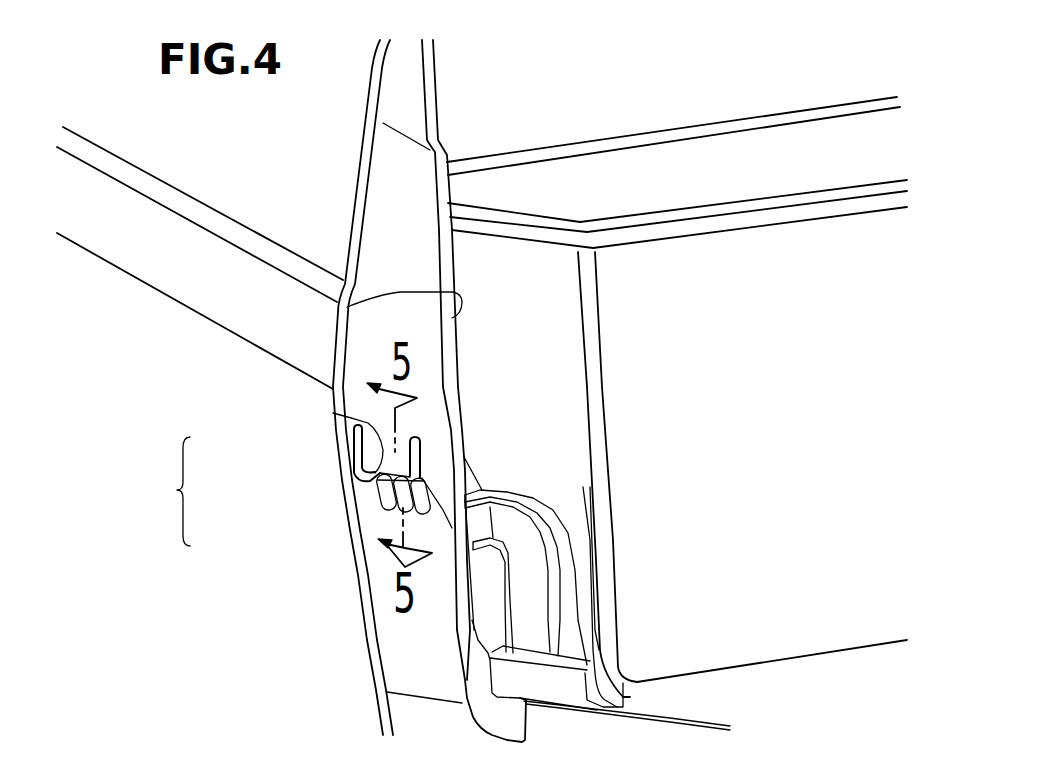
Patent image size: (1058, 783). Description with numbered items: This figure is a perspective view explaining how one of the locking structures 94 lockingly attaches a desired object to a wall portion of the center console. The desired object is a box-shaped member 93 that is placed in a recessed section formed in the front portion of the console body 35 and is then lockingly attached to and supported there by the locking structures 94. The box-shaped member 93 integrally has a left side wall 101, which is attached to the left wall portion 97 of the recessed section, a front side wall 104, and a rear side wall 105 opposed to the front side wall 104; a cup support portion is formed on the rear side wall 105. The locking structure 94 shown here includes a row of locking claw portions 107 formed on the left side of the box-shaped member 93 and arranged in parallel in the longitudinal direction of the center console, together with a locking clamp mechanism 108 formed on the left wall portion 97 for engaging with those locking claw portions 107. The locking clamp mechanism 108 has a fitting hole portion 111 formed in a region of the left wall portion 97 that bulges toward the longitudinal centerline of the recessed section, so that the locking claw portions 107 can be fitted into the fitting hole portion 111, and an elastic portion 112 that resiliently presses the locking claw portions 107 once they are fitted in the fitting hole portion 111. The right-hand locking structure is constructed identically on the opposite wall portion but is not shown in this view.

The console body 35 is at (173, 257).
The box-shaped member 93 is at (596, 112).
The locking structure 94 is at (165, 491).
The left wall portion 97 is at (347, 307).
The left side wall 101 is at (510, 273).
The front side wall 104 is at (725, 160).
The rear side wall 105 is at (718, 368).
The locking claw portions 107 is at (463, 518).
The locking clamp mechanism 108 is at (346, 458).
The fitting hole portion 111 is at (333, 413).
The elastic portion 112 is at (422, 461).